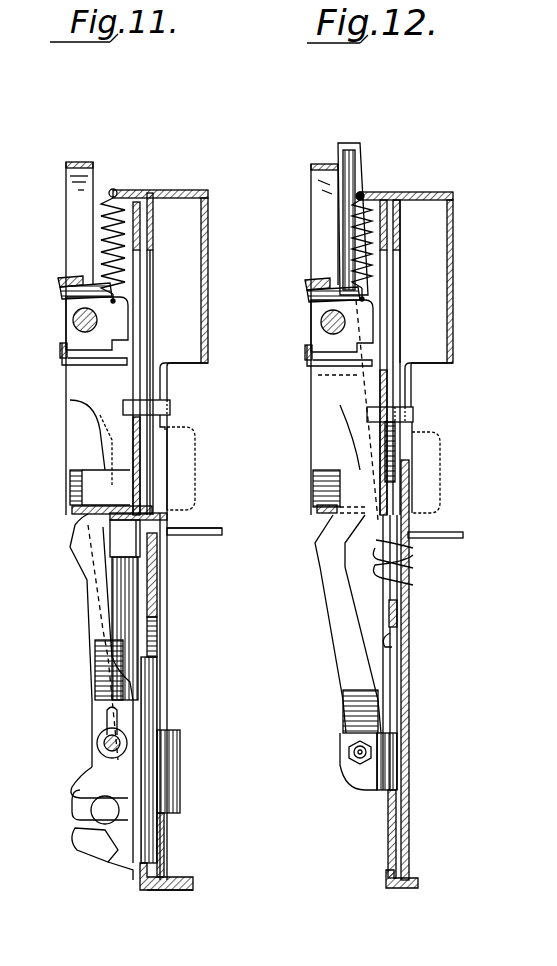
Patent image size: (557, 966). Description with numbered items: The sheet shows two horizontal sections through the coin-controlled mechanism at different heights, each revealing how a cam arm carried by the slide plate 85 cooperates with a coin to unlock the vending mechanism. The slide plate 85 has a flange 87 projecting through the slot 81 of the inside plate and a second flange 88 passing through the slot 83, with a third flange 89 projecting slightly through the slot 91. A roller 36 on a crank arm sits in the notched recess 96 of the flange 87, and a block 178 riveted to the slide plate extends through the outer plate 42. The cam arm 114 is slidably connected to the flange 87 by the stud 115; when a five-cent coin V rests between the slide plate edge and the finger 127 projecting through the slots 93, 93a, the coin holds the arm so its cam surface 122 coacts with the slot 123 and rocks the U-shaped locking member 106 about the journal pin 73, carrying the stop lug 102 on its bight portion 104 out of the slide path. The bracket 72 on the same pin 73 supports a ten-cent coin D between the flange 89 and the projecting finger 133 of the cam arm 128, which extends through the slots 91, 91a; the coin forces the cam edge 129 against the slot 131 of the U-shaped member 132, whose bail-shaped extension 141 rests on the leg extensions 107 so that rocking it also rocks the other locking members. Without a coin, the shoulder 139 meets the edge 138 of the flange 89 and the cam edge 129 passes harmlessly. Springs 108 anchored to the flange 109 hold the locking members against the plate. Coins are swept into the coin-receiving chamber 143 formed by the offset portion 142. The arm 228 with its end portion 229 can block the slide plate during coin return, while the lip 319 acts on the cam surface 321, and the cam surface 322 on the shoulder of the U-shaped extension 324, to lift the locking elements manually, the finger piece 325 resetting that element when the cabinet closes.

In FIG. 11, the bail-shaped extension 141 is at (77, 160).
In FIG. 12, the bail-shaped extension 141 is at (311, 163).
In FIG. 11, the springs 108 is at (120, 205).
In FIG. 12, the springs 108 is at (370, 198).
In FIG. 11, the flange 109 is at (165, 190).
In FIG. 12, the flange 109 is at (365, 192).
In FIG. 11, the registering slot 93a is at (134, 313).
In FIG. 11, the slot 93 is at (148, 350).
In FIG. 11, the U-shaped bracket 72 is at (70, 290).
In FIG. 12, the U-shaped bracket 72 is at (315, 290).
In FIG. 11, the journal pin 73 is at (72, 320).
In FIG. 12, the journal pin 73 is at (322, 322).
In FIG. 11, the lip 319 is at (70, 400).
In FIG. 11, the U-shaped locking member 106 is at (70, 422).
In FIG. 11, the finger 127 is at (172, 406).
In FIG. 11, the five-cent coin V is at (155, 462).
In FIG. 11, the slot 123 is at (70, 480).
In FIG. 11, the cam surface 322 is at (72, 500).
In FIG. 11, the cam surface 321 is at (72, 520).
In FIG. 11, the stop lug 102 is at (167, 512).
In FIG. 11, the bight portion 104 is at (145, 545).
In FIG. 11, the forwardly projecting end portion 229 is at (190, 528).
In FIG. 11, the arm 228 is at (222, 535).
In FIG. 12, the arm 228 is at (463, 532).
In FIG. 11, the cam surface 122 is at (82, 527).
In FIG. 11, the U-shaped extension 324 is at (128, 522).
In FIG. 11, the cam arm 114 is at (90, 628).
In FIG. 11, the slide plate 85 is at (150, 650).
In FIG. 12, the slide plate 85 is at (398, 690).
In FIG. 11, the slot 81 is at (170, 655).
In FIG. 11, the stud 115 is at (98, 742).
In FIG. 11, the block 178 is at (182, 770).
In FIG. 11, the roller 36 is at (75, 800).
In FIG. 11, the notched recess 96 is at (72, 822).
In FIG. 11, the flange 87 is at (110, 852).
In FIG. 11, the outer plate 42 is at (165, 870).
In FIG. 12, the outer plate 42 is at (409, 812).
In FIG. 11, the finger piece 325 is at (183, 892).
In FIG. 12, the leg extension 107 is at (358, 145).
In FIG. 12, the coin-receiving chamber 143 is at (423, 237).
In FIG. 12, the registering slot 91a is at (378, 282).
In FIG. 12, the outwardly offset portion 142 is at (455, 335).
In FIG. 12, the U-shaped member 132 is at (311, 410).
In FIG. 12, the projecting finger 133 is at (415, 414).
In FIG. 12, the shoulder 139 is at (338, 470).
In FIG. 12, the ten-cent coin D is at (395, 462).
In FIG. 12, the slot 131 is at (320, 500).
In FIG. 12, the slot 91 is at (400, 455).
In FIG. 12, the cam edge 129 is at (318, 538).
In FIG. 12, the cam arm 128 is at (345, 650).
In FIG. 12, the edge 138 is at (392, 540).
In FIG. 12, the flange 89 is at (398, 578).
In FIG. 12, the slot 83 is at (395, 640).
In FIG. 12, the flange 88 is at (370, 790).